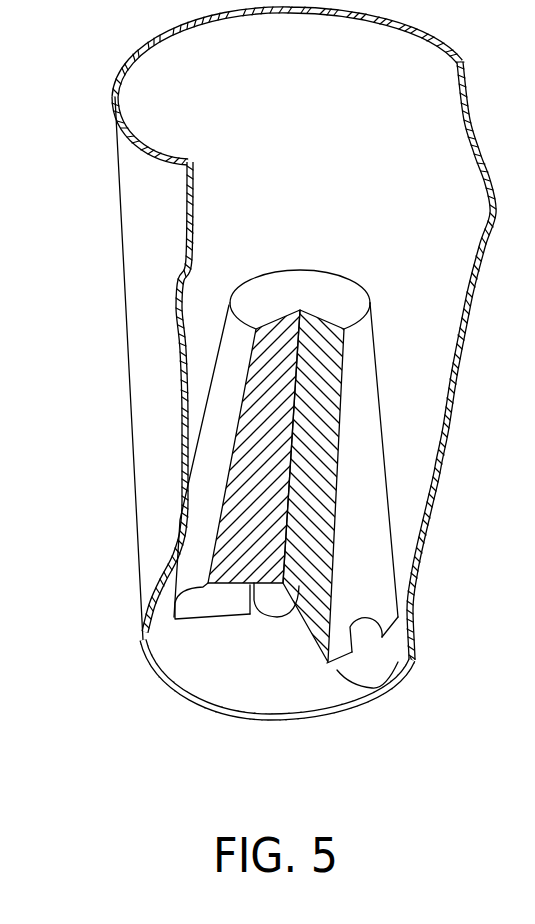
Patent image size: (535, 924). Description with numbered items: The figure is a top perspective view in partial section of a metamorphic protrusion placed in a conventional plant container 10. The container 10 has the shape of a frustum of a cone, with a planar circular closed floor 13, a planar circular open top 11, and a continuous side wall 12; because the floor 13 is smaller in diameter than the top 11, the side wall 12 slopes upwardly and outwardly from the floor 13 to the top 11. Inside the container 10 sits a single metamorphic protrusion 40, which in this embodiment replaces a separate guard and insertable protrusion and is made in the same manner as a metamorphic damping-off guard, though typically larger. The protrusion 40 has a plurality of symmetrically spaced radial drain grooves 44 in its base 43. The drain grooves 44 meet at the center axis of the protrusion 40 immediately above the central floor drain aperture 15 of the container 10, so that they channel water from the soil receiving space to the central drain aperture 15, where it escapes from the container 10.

The plant container 10 is at (165, 40).
The top 11 is at (130, 62).
The side wall 12 is at (137, 320).
The floor 13 is at (243, 690).
The central floor drain aperture 15 is at (277, 607).
The metamorphic protrusion 40 is at (347, 278).
The base 43 is at (340, 666).
The drain grooves 44 is at (210, 607).